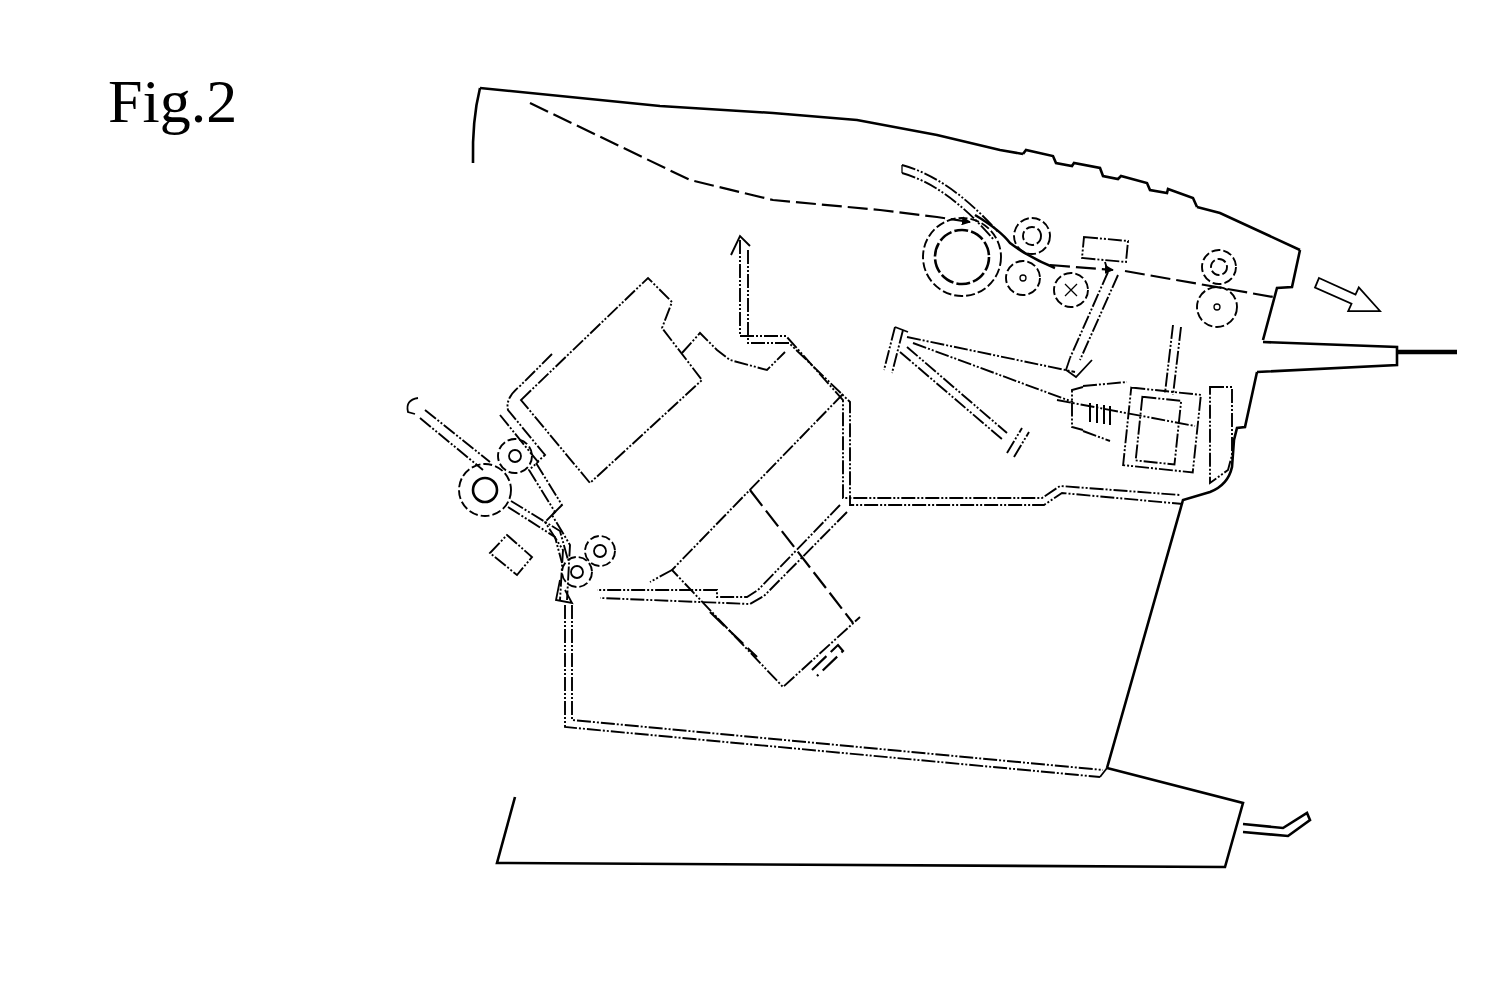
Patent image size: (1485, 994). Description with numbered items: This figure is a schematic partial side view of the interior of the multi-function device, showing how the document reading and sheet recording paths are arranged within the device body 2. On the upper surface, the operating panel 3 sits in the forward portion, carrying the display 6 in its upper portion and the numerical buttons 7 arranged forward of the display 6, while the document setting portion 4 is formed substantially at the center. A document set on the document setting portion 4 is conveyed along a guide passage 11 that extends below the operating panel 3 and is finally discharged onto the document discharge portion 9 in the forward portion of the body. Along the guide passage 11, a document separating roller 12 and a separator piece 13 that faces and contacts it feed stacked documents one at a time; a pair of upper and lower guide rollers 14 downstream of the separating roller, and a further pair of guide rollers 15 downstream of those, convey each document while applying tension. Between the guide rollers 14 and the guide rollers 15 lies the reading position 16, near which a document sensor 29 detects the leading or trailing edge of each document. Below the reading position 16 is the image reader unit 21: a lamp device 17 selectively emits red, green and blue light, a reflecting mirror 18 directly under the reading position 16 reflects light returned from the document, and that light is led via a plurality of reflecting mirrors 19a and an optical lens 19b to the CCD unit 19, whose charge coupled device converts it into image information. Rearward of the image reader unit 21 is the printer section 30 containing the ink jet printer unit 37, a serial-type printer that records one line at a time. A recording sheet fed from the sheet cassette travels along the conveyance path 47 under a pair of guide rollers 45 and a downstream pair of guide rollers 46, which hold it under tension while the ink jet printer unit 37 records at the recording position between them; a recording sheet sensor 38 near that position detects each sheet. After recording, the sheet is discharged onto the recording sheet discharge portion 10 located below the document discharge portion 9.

The device body 2 is at (1146, 637).
The operating panel 3 is at (945, 128).
The document setting portion 4 is at (693, 180).
The display 6 is at (912, 127).
The numerical buttons 7 is at (1048, 152).
The document discharge portion 9 is at (1347, 362).
The recording sheet discharge portion 10 is at (1160, 780).
The guide passage 11 is at (853, 203).
The document separating roller 12 is at (929, 275).
The separator piece 13 is at (938, 180).
The guide rollers 14 is at (1058, 248).
The guide rollers 15 is at (1210, 258).
The reading position 16 is at (1130, 244).
The lamp device 17 is at (1053, 300).
The reflecting mirror 18 is at (1074, 364).
The CCD unit 19 is at (1224, 443).
The reflecting mirrors 19a is at (893, 378).
The optical lens 19b is at (1108, 386).
The image reader unit 21 is at (998, 472).
The document sensor 29 is at (1128, 268).
The printer section 30 is at (585, 320).
The ink jet printer unit 37 is at (858, 626).
The recording sheet sensor 38 is at (493, 580).
The guide rollers 45 is at (507, 447).
The guide rollers 46 is at (575, 588).
The conveyance path 47 is at (420, 440).